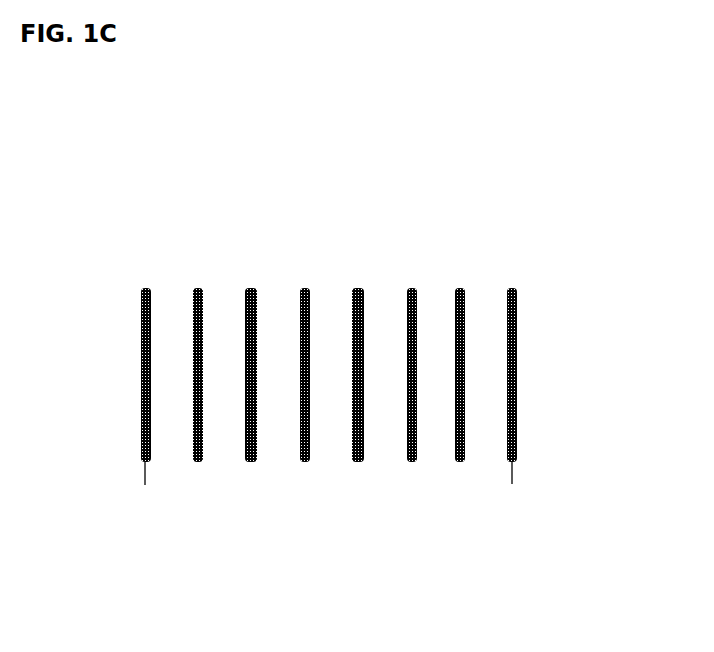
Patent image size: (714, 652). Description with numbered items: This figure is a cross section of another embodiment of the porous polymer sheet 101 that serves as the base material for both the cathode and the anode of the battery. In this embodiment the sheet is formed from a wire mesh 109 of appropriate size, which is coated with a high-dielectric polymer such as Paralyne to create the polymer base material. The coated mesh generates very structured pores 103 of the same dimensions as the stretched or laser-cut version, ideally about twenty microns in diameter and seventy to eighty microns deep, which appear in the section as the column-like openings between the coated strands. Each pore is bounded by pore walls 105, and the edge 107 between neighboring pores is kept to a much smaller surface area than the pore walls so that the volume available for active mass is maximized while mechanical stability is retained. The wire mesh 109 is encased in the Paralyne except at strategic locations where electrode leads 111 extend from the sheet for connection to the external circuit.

The porous polymer sheet 101 is at (277, 227).
The pores 103 is at (361, 238).
The pore walls 105 is at (245, 332).
The edge 107 is at (459, 290).
The wire mesh 109 is at (202, 417).
The electrode leads 111 is at (384, 452).